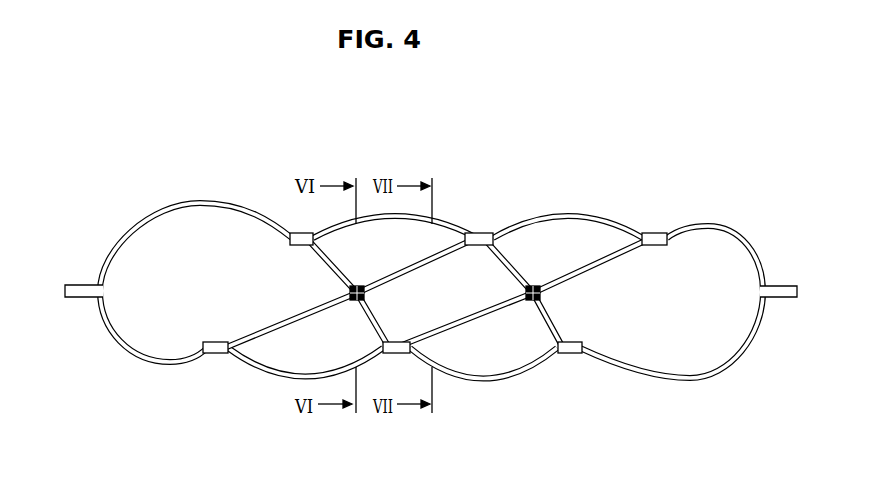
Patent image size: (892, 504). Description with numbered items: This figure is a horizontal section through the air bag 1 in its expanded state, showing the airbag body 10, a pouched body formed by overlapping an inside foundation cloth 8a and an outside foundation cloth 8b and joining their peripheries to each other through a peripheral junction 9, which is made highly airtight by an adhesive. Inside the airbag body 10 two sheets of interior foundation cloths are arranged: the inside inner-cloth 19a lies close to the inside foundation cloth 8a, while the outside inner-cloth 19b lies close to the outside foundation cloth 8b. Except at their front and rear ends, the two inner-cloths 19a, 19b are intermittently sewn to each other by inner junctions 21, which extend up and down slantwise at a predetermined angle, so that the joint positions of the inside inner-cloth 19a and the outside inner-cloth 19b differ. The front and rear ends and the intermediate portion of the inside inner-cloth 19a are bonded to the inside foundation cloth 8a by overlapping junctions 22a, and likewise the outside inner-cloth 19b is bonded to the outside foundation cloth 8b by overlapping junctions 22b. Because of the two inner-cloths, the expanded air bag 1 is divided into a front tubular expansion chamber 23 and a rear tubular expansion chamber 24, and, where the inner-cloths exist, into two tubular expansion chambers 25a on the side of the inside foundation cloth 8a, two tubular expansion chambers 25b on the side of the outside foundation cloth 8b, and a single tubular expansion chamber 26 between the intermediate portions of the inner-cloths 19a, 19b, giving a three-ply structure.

The air bag 1 is at (464, 129).
The inside foundation cloth 8a is at (115, 330).
The outside foundation cloth 8b is at (143, 218).
The peripheral junction 9 is at (92, 297).
The airbag body 10 is at (150, 170).
The inside inner-cloth 19a is at (273, 332).
The outside inner-cloth 19b is at (600, 256).
The inner junction 21 is at (350, 300).
The overlapping junction 22a is at (215, 354).
The overlapping junction 22b is at (302, 232).
The tubular expansion chamber 23 is at (217, 295).
The tubular expansion chamber 24 is at (672, 315).
The tubular expansion chamber 25a is at (340, 357).
The tubular expansion chamber 25b is at (393, 261).
The tubular expansion chamber 26 is at (453, 315).